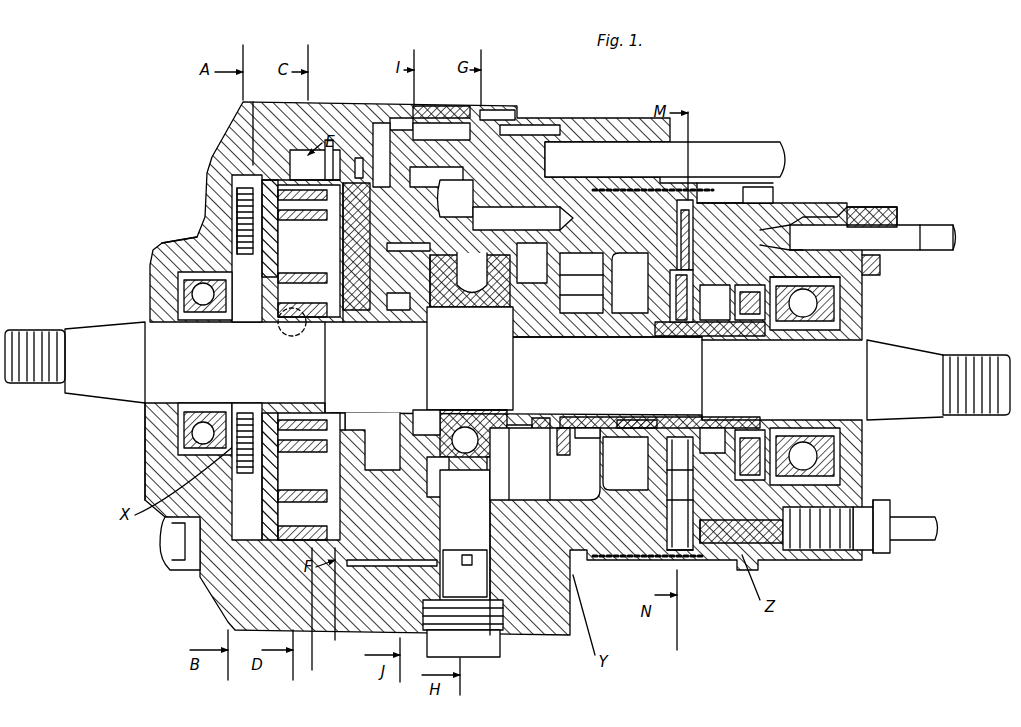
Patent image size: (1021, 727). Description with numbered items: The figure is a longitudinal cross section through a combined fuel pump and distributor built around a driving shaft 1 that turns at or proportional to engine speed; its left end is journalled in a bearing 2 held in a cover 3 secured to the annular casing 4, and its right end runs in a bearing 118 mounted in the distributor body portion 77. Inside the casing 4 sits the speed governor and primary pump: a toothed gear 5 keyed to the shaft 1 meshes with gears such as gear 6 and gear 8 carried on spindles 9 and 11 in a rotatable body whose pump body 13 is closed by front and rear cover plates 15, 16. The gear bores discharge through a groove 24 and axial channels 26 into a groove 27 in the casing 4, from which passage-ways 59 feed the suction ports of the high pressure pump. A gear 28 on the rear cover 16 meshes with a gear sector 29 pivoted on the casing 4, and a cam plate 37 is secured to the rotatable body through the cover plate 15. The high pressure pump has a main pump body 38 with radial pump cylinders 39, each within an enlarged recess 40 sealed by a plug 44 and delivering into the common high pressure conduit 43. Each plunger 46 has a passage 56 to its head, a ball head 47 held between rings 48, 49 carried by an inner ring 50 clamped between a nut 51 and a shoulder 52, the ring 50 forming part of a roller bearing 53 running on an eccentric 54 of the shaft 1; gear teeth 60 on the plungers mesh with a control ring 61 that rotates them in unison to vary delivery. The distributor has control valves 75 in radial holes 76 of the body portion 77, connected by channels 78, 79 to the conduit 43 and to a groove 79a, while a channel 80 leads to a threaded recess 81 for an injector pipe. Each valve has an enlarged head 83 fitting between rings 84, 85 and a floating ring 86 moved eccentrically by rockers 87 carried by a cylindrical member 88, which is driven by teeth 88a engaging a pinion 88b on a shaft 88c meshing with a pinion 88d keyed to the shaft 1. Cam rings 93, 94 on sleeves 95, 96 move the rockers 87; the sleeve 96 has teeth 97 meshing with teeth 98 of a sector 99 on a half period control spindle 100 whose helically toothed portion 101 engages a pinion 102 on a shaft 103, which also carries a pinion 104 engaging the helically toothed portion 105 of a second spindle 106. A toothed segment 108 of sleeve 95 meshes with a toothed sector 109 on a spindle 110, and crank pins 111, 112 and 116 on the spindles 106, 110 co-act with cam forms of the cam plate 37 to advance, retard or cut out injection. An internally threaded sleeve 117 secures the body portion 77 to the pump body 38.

The driving shaft 1 is at (97, 360).
The bearing 2 is at (165, 440).
The cover 3 is at (164, 258).
The annular casing or housing 4 is at (275, 135).
The toothed gear 5 is at (290, 322).
The toothed gear 6 is at (215, 535).
The toothed gear 8 is at (245, 212).
The spindle 9 is at (288, 476).
The spindle 11 is at (309, 251).
The pump body 13 is at (262, 190).
The front cover plate 15 is at (317, 609).
The rear cover plate 16 is at (190, 425).
The recess or groove 24 is at (300, 175).
The axially disposed channel 26 is at (330, 160).
The groove 27 is at (358, 165).
The gear 28 is at (178, 290).
The gear sector 29 is at (238, 238).
The cam plate 37 is at (380, 170).
The main pump body 38 is at (562, 580).
The pump cylinder 39 is at (522, 612).
The enlarged circular recess 40 is at (430, 620).
The groove or high pressure conduit 43 is at (650, 192).
The plug 44 is at (487, 645).
The plunger 46 is at (537, 435).
The ball head 47 is at (463, 428).
The ring 48 is at (420, 425).
The ring 49 is at (512, 428).
The inner ring 50 is at (478, 420).
The nut 51 is at (437, 305).
The shoulder 52 is at (515, 276).
The roller bearing 53 is at (500, 305).
The eccentric 54 is at (470, 358).
The passage 56 is at (467, 590).
The passage-way 59 is at (395, 610).
The gear teeth 60 is at (398, 445).
The control ring 61 is at (405, 290).
The control valve 75 is at (705, 562).
The cylindrical hole 76 is at (740, 545).
The distributor body portion 77 is at (797, 212).
The channel 78 is at (672, 195).
The channel 79 is at (708, 190).
The groove 79a is at (640, 495).
The channel 80 is at (757, 228).
The screw-threaded recess 81 is at (857, 210).
The enlarged head 83 is at (670, 335).
The ring 84 is at (655, 265).
The ring 85 is at (715, 322).
The floating ring 86 is at (688, 322).
The rocker 87 is at (688, 437).
The cylindrical member 88 is at (866, 268).
The teeth 88a is at (866, 470).
The pinion 88b is at (812, 312).
The shaft 88c is at (770, 300).
The pinion 88d is at (735, 305).
The cam ring 93 is at (642, 420).
The period cam ring 94 is at (705, 428).
The sleeve 95 is at (600, 440).
The sleeve 96 is at (594, 322).
The teeth 97 is at (540, 432).
The teeth 98 is at (556, 300).
The sector 99 is at (547, 280).
The half period control spindle 100 is at (527, 200).
The helically toothed portion 101 is at (563, 222).
The pinion 102 is at (510, 132).
The shaft 103 is at (695, 165).
The pinion 104 is at (414, 120).
The helically toothed portion 105 is at (460, 178).
The half period control spindle 106 is at (495, 118).
The toothed segment 108 is at (572, 458).
The toothed sector 109 is at (580, 470).
The spindle 110 is at (540, 470).
The crank pin 111 is at (352, 322).
The crank pin 112 is at (343, 415).
The crank pin 116 is at (430, 185).
The internally threaded sleeve 117 is at (680, 562).
The bearing 118 is at (862, 445).